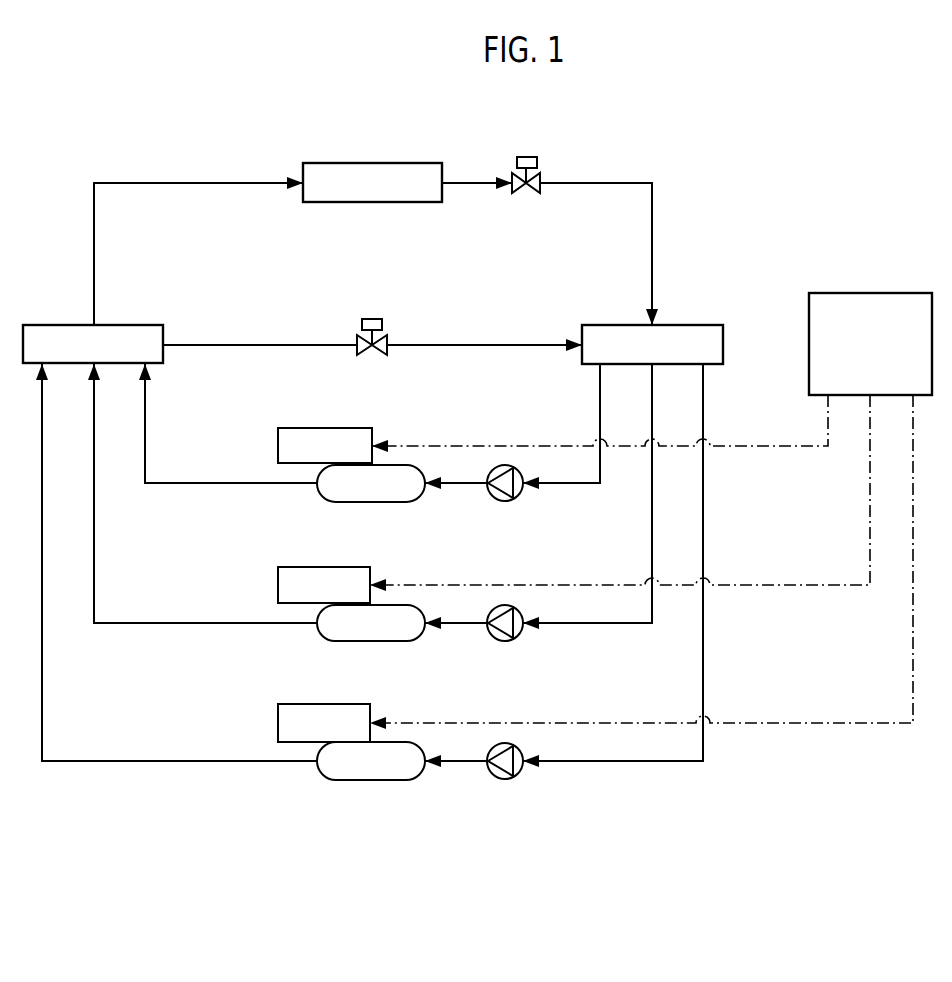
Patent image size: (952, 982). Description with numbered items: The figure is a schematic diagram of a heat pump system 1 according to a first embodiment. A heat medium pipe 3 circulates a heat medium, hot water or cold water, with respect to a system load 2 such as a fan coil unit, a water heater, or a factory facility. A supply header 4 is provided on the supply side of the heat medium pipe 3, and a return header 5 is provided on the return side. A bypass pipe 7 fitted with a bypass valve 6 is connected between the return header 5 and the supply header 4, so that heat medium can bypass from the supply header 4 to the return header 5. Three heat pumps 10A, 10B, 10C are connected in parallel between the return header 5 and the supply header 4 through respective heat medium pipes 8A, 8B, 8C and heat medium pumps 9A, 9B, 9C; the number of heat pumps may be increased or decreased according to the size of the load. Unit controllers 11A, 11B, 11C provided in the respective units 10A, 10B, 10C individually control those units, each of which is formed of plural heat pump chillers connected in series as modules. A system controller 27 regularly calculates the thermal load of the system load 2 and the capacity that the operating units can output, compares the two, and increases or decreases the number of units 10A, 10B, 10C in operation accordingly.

The heat pump system 1 is at (758, 160).
The system load 2 is at (370, 163).
The heat medium pipe 3 is at (170, 181).
The supply header 4 is at (45, 325).
The return header 5 is at (686, 325).
The bypass valve 6 is at (370, 319).
The bypass pipe 7 is at (254, 345).
The heat medium pipe 8A is at (600, 393).
The heat medium pipe 8B is at (652, 527).
The heat medium pipe 8C is at (704, 513).
The heat medium pump 9A is at (505, 502).
The heat medium pump 9B is at (505, 642).
The heat medium pump 9C is at (505, 780).
The heat pump 10A is at (395, 503).
The heat pump 10B is at (395, 642).
The heat pump 10C is at (395, 781).
The unit controller 11A is at (325, 428).
The unit controller 11B is at (298, 567).
The unit controller 11C is at (298, 704).
The system controller 27 is at (870, 293).